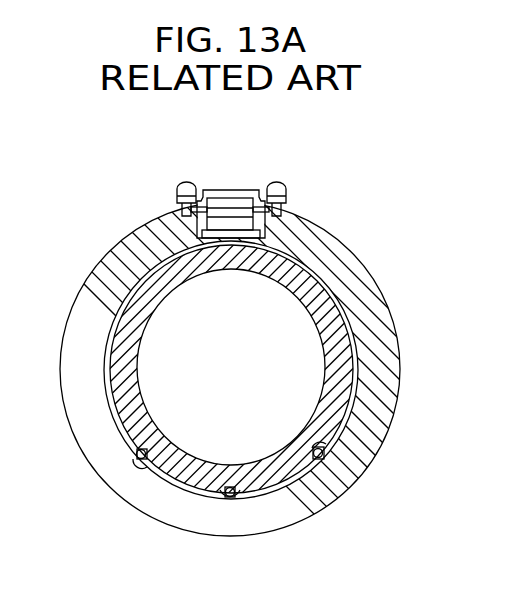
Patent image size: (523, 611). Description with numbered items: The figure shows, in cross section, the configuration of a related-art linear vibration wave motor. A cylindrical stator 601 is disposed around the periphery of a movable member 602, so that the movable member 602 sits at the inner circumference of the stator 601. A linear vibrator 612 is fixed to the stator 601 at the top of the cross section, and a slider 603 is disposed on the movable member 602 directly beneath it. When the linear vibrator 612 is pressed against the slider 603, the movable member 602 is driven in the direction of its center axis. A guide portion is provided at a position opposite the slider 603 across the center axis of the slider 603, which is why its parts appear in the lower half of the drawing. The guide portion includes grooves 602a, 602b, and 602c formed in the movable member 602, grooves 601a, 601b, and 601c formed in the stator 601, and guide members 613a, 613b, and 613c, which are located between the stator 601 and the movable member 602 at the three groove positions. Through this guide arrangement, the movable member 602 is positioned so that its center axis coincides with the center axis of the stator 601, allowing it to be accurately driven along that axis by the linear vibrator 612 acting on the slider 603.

The stator 601 is at (374, 301).
The movable member 602 is at (336, 345).
The slider 603 is at (235, 234).
The linear vibrator 612 is at (232, 184).
The groove 601a is at (150, 483).
The groove 601b is at (269, 486).
The groove 601c is at (320, 436).
The groove 602a is at (146, 450).
The groove 602b is at (230, 487).
The groove 602c is at (315, 449).
The guide member 613a is at (143, 463).
The guide member 613b is at (233, 500).
The guide member 613c is at (325, 459).